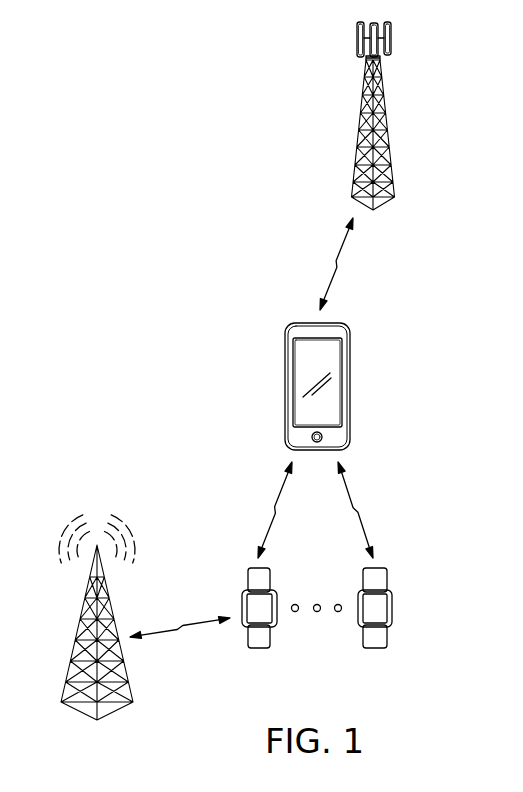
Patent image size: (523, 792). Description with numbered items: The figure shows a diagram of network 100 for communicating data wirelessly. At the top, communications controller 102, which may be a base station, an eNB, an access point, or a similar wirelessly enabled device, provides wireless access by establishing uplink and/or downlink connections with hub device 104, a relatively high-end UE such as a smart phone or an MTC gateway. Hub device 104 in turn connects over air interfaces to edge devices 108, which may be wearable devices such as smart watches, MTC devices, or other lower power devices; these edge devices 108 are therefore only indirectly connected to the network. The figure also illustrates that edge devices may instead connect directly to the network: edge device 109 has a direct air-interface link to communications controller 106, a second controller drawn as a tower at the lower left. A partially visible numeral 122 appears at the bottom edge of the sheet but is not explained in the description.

The system 100 is at (136, 138).
The cellular base station / tower 102 is at (390, 117).
The mobile device (phone) 104 is at (352, 385).
The wireless access point / tower 106 is at (77, 628).
The wearable device (watch) 108 is at (258, 648).
The wireless link 109 is at (242, 608).
The partially visible numeral 122 is at (522, 788).